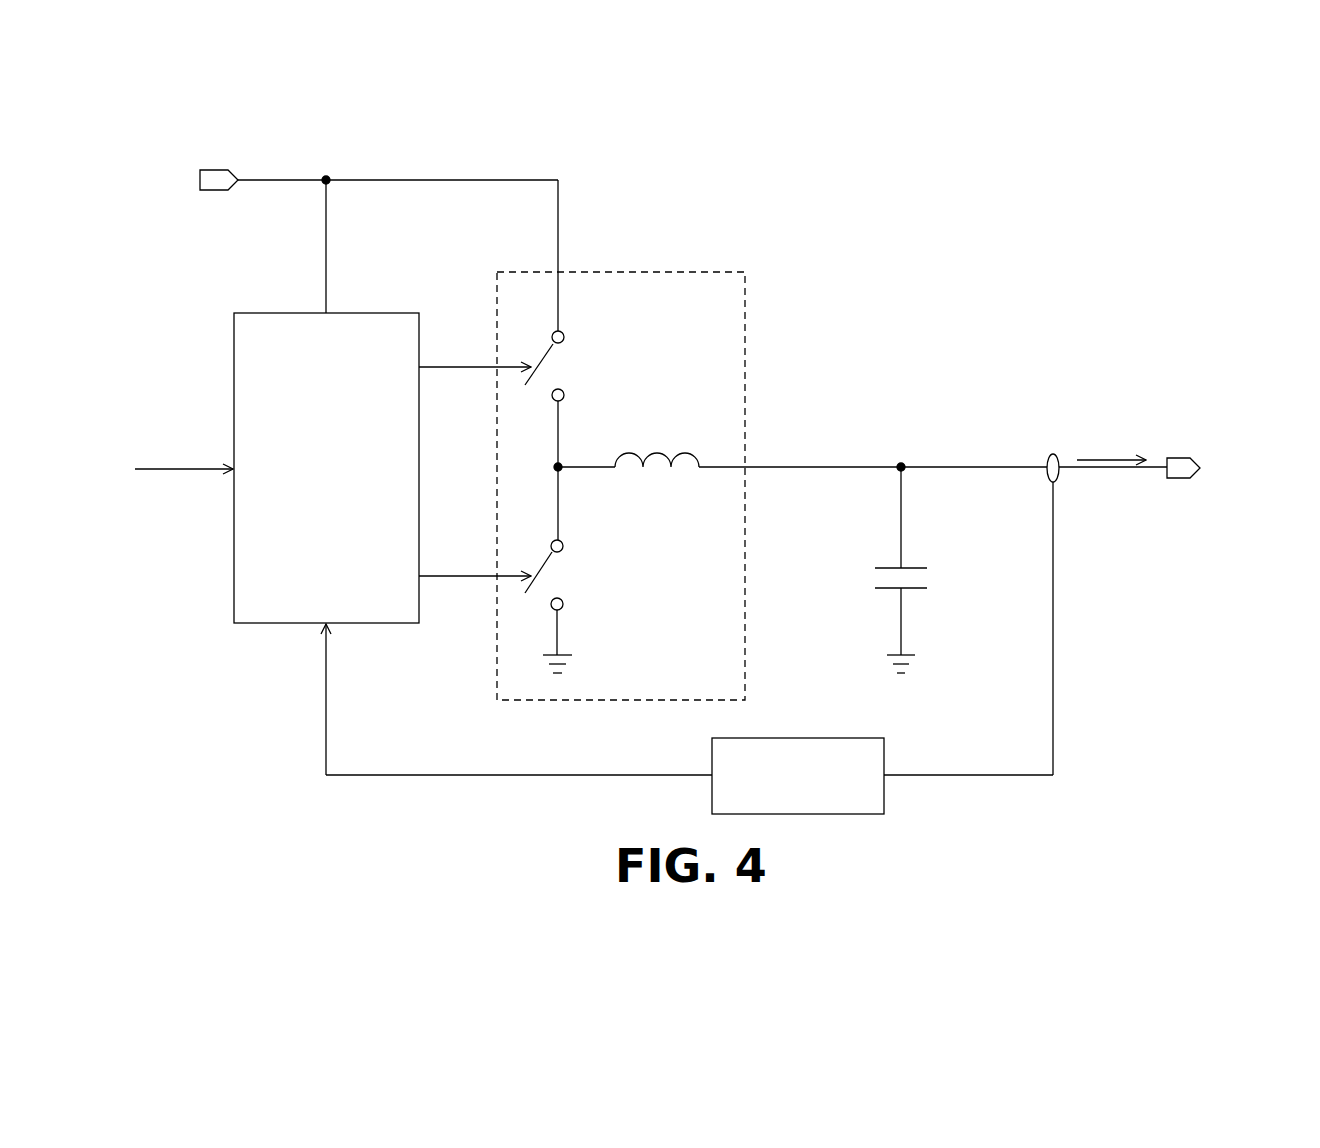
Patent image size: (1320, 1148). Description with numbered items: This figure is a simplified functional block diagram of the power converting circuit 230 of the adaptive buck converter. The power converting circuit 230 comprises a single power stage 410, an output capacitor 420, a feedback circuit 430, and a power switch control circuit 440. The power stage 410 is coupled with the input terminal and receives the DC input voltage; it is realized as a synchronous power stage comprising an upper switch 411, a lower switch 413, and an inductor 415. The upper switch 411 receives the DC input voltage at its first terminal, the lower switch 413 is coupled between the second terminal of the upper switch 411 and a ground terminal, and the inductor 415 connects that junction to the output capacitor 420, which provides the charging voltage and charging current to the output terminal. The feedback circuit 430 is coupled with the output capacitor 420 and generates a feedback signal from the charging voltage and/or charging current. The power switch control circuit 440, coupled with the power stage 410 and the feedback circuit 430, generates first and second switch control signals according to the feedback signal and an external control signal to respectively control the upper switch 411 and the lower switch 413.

The power converting circuit 230 is at (1112, 170).
The power stage 410 is at (620, 272).
The upper switch 411 is at (555, 367).
The lower switch 413 is at (555, 575).
The inductor 415 is at (659, 448).
The output capacitor 420 is at (920, 575).
The feedback circuit 430 is at (797, 738).
The power switch control circuit 440 is at (234, 352).